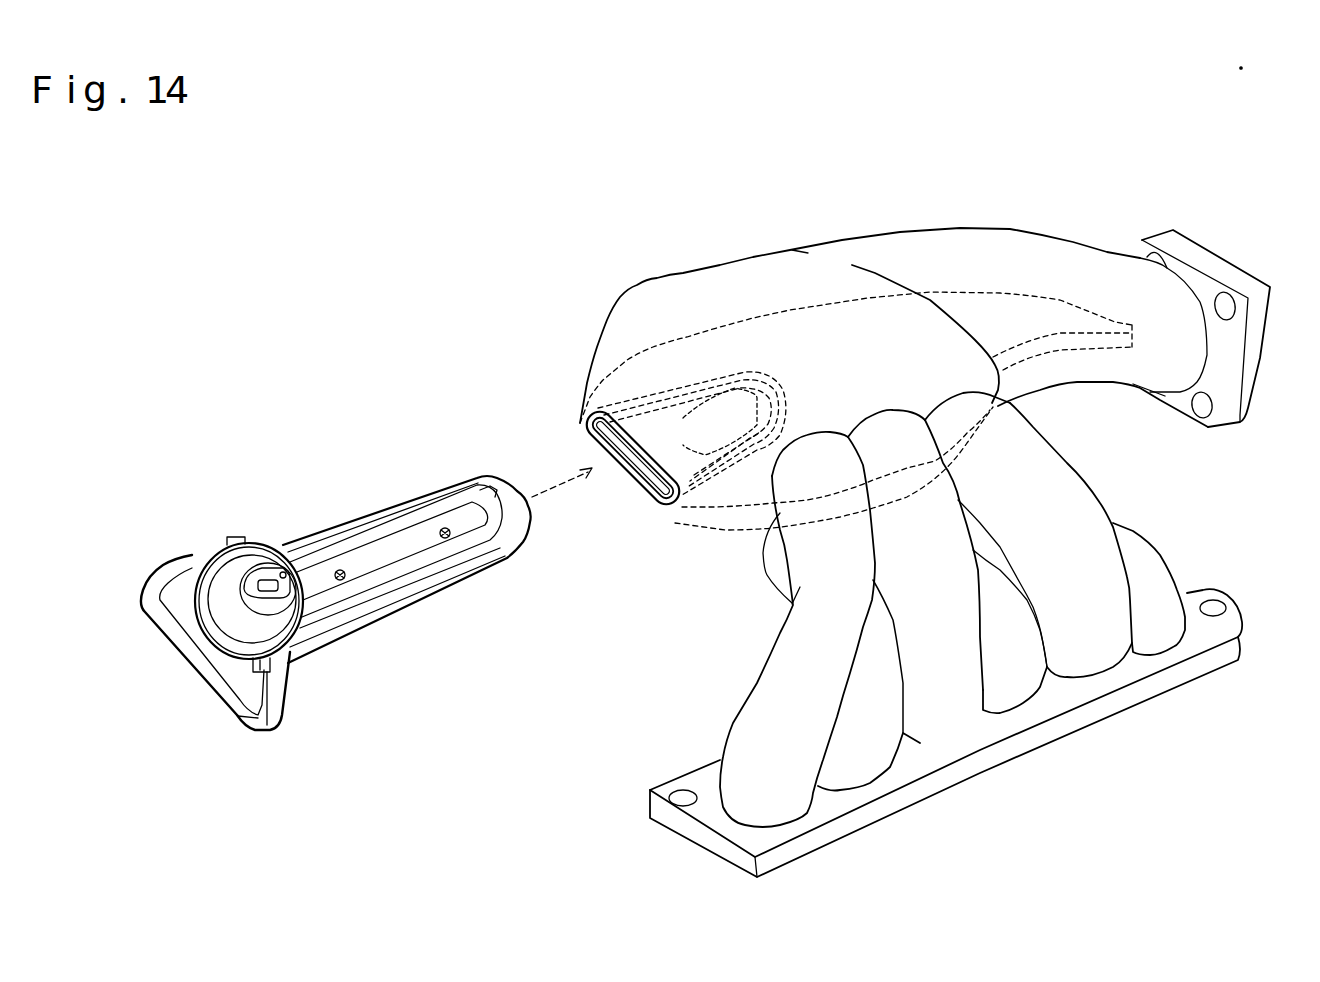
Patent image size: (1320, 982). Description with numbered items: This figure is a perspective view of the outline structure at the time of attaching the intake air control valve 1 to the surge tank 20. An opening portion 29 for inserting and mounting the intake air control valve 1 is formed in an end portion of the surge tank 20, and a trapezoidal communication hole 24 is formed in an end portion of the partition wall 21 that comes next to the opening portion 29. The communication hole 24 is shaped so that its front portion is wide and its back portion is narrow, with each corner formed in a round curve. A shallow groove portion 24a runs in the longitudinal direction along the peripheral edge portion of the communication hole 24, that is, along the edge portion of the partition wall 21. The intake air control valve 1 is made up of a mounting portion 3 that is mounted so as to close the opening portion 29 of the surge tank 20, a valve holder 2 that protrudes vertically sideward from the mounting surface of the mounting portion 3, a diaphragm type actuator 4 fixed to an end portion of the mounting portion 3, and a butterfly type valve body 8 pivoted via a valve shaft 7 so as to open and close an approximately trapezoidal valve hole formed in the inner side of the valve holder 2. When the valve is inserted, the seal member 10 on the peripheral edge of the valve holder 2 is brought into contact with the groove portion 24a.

The intake air control valve 1 is at (292, 498).
The valve holder 2 is at (368, 512).
The mounting portion 3 is at (286, 720).
The diaphragm type actuator 4 is at (216, 547).
The valve shaft 7 is at (368, 570).
The butterfly type valve body 8 is at (404, 575).
The seal member 10 is at (444, 480).
The surge tank 20 is at (767, 276).
The partition wall 21 is at (868, 298).
The communication hole 24 is at (700, 413).
The groove portion 24a is at (658, 393).
The opening portion 29 is at (650, 493).